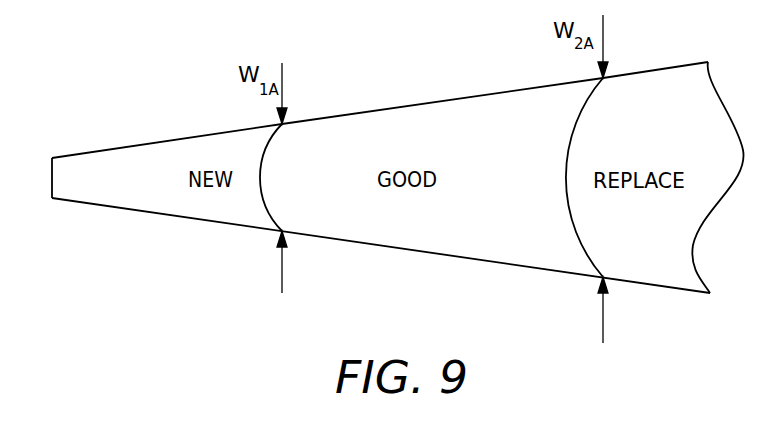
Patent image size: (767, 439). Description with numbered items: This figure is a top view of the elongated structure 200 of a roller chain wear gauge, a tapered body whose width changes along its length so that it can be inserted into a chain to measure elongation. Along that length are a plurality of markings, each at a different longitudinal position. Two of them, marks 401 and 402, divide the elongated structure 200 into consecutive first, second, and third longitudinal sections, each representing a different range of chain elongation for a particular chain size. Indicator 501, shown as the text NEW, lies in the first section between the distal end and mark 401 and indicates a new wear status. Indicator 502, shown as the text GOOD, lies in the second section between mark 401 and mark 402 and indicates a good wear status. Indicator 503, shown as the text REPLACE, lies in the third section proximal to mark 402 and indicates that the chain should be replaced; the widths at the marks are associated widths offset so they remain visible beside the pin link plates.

The elongated structure 200 is at (398, 176).
The indicator 501 is at (162, 146).
The indicator 502 is at (418, 104).
The indicator 503 is at (672, 69).
The mark 401 is at (260, 179).
The mark 402 is at (572, 233).